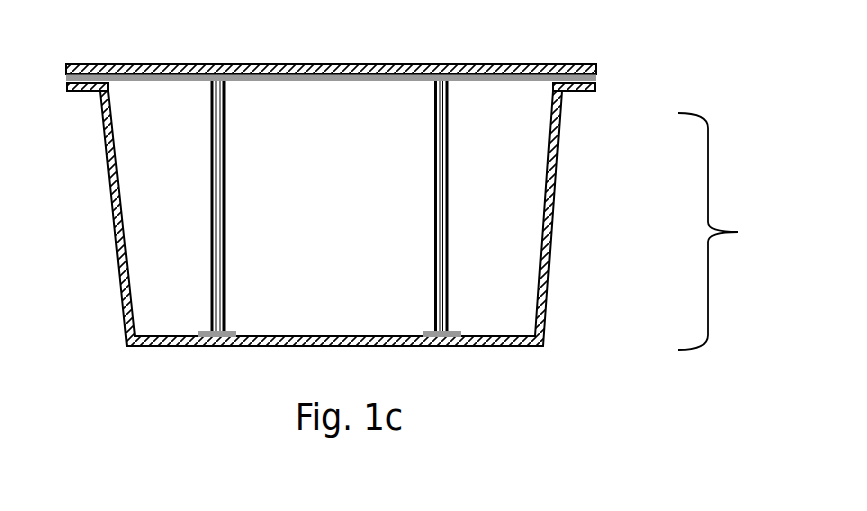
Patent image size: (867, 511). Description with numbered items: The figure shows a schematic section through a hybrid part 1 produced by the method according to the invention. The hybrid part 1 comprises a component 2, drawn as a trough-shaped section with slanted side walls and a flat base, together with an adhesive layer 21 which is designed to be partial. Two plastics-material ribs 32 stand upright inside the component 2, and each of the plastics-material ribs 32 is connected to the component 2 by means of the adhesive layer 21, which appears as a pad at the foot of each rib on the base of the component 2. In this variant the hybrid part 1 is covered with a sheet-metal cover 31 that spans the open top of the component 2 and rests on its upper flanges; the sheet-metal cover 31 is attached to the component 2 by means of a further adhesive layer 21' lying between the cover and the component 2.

The hybrid part 1 is at (724, 231).
The component 2 is at (559, 130).
The adhesive layer 21 is at (438, 329).
The adhesive layer 21' is at (375, 92).
The sheet-metal cover 31 is at (596, 71).
The plastics-material ribs 32 is at (449, 178).